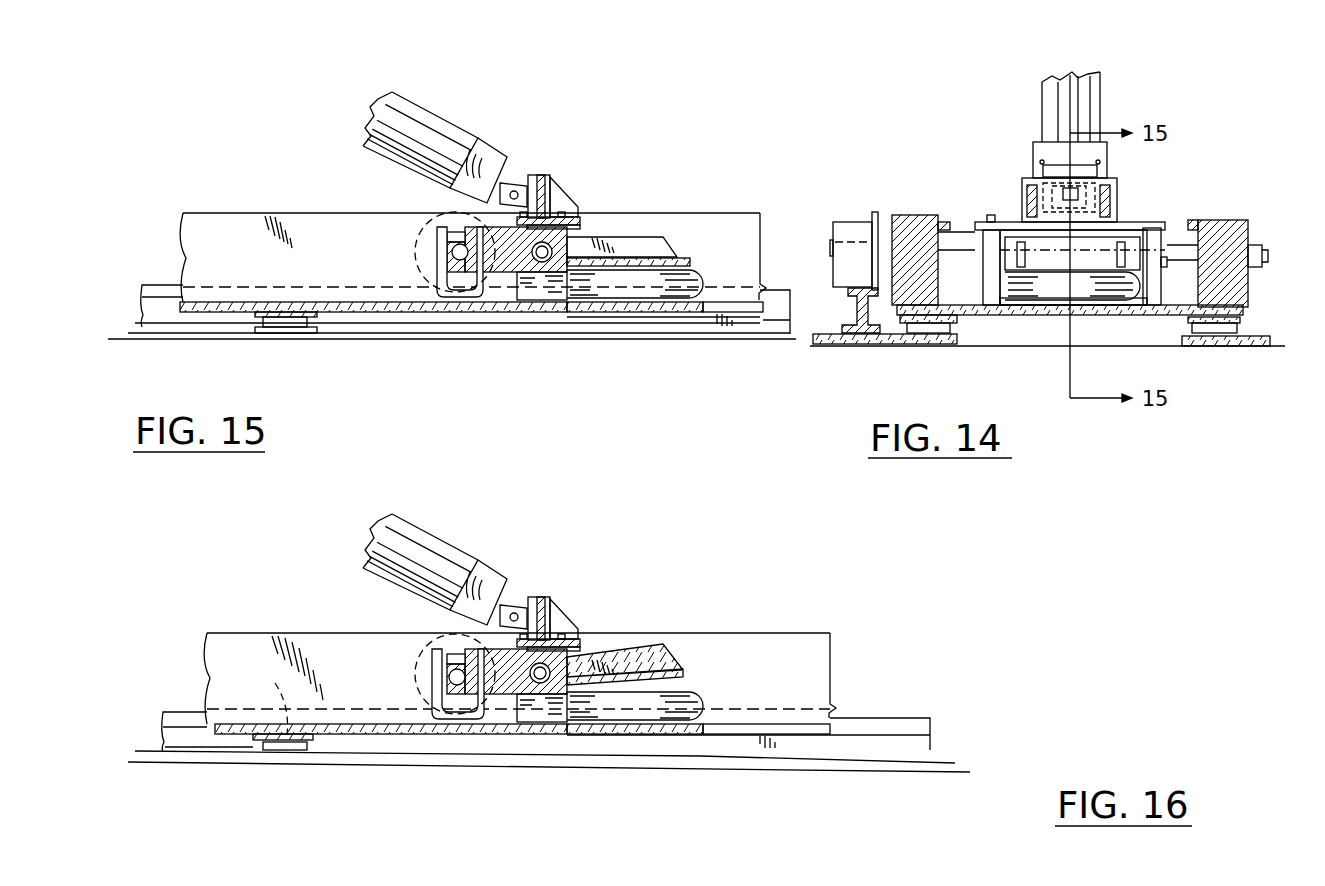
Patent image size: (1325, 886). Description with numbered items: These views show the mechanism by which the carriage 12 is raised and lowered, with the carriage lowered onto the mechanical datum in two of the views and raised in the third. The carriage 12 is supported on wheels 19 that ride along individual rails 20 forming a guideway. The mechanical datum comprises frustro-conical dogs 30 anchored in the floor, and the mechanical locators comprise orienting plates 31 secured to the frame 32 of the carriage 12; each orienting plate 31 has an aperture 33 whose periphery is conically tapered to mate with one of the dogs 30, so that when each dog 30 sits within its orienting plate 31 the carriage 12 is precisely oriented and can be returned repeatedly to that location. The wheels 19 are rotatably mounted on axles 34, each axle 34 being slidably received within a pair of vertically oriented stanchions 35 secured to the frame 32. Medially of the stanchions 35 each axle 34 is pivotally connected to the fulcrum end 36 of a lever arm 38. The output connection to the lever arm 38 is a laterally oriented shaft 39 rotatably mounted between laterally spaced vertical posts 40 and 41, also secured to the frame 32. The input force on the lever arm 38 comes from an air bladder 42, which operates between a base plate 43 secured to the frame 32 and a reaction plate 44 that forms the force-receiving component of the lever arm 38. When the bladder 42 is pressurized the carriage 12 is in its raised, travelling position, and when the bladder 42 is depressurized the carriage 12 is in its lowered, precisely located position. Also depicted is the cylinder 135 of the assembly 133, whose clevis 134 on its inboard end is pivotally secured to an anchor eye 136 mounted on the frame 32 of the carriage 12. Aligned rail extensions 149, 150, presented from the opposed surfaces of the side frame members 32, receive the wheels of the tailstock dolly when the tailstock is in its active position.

In FIG. 15, the carriage 12 is at (256, 203).
In FIG. 14, the carriage 12 is at (913, 206).
In FIG. 16, the carriage 12 is at (520, 665).
In FIG. 15, the wheels 19 is at (432, 216).
In FIG. 14, the wheels 19 is at (852, 222).
In FIG. 16, the wheels 19 is at (427, 659).
In FIG. 15, the rails 20 is at (767, 318).
In FIG. 14, the rails 20 is at (850, 310).
In FIG. 16, the rails 20 is at (549, 721).
In FIG. 15, the frustro-conical dogs 30 is at (286, 328).
In FIG. 14, the frustro-conical dogs 30 is at (925, 333).
In FIG. 16, the frustro-conical dogs 30 is at (276, 774).
In FIG. 15, the orienting plates 31 is at (320, 316).
In FIG. 14, the orienting plates 31 is at (957, 324).
In FIG. 16, the orienting plates 31 is at (310, 770).
In FIG. 15, the frame 32 is at (706, 224).
In FIG. 14, the frame 32 is at (920, 232).
In FIG. 16, the frame 32 is at (496, 675).
In FIG. 16, the aperture 33 is at (266, 700).
In FIG. 15, the axles 34 is at (452, 252).
In FIG. 14, the axles 34 is at (1262, 260).
In FIG. 16, the axles 34 is at (461, 686).
In FIG. 15, the stanchions 35 is at (440, 272).
In FIG. 16, the stanchions 35 is at (410, 676).
In FIG. 15, the fulcrum end 36 is at (467, 295).
In FIG. 16, the fulcrum end 36 is at (458, 726).
In FIG. 15, the lever arm 38 is at (508, 277).
In FIG. 16, the lever arm 38 is at (507, 728).
In FIG. 15, the shaft 39 is at (567, 242).
In FIG. 14, the shaft 39 is at (1248, 262).
In FIG. 16, the shaft 39 is at (566, 628).
In FIG. 14, the vertical post 40 is at (992, 235).
In FIG. 15, the vertical post 41 is at (555, 287).
In FIG. 14, the vertical post 41 is at (1158, 248).
In FIG. 16, the vertical post 41 is at (559, 749).
In FIG. 15, the air bladder 42 is at (708, 282).
In FIG. 14, the air bladder 42 is at (1042, 292).
In FIG. 16, the air bladder 42 is at (664, 700).
In FIG. 15, the base plate 43 is at (668, 313).
In FIG. 14, the base plate 43 is at (1090, 300).
In FIG. 16, the base plate 43 is at (635, 761).
In FIG. 15, the reaction plate 44 is at (660, 255).
In FIG. 14, the reaction plate 44 is at (1098, 252).
In FIG. 16, the reaction plate 44 is at (635, 642).
In FIG. 15, the arm assembly 133 is at (435, 130).
In FIG. 15, the clevis 134 is at (510, 183).
In FIG. 16, the clevis 134 is at (523, 578).
In FIG. 15, the cylinder 135 is at (442, 132).
In FIG. 14, the cylinder 135 is at (1085, 106).
In FIG. 16, the cylinder 135 is at (435, 565).
In FIG. 15, the anchor eye 136 is at (540, 176).
In FIG. 16, the anchor eye 136 is at (552, 597).
In FIG. 14, the rail extension 149 is at (946, 222).
In FIG. 14, the rail extension 150 is at (1196, 220).